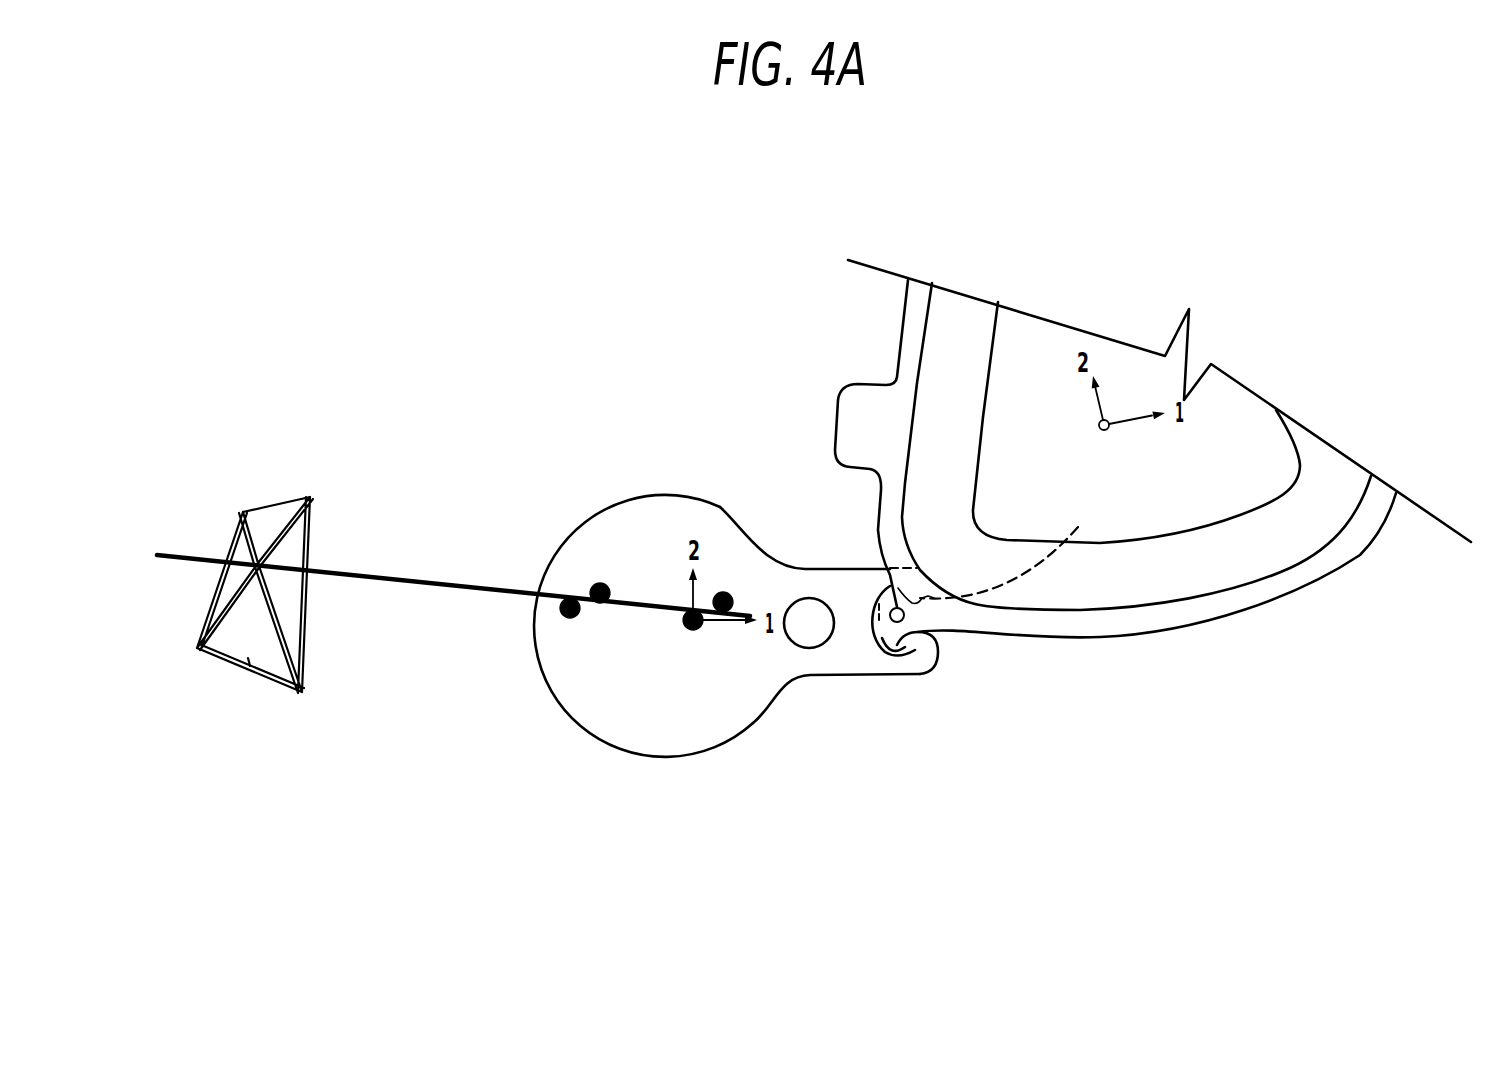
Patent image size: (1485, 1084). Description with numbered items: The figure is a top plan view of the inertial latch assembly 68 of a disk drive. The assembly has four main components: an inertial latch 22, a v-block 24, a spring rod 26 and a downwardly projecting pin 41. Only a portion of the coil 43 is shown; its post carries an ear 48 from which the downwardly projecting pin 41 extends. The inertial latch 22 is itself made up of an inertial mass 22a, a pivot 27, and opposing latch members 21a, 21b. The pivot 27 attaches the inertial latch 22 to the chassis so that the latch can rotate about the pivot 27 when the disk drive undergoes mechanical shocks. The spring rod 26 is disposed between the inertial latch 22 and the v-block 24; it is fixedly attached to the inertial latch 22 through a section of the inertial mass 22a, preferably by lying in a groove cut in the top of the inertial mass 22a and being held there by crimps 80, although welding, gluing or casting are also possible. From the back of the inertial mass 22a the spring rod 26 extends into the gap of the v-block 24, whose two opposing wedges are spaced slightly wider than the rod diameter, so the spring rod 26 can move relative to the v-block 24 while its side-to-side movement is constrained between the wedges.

The v-block 24 is at (289, 488).
The spring rod 26 is at (418, 575).
The inertial latch 22 is at (597, 503).
The inertial mass 22a is at (752, 723).
The crimps 80 is at (730, 593).
The pivot 27 is at (826, 652).
The downwardly projecting pin 41 is at (897, 607).
The ear 48 is at (899, 627).
The latch member 21a is at (1016, 549).
The latch member 21b is at (942, 655).
The coil 43 is at (1264, 608).
The inertial latch assembly 68 is at (590, 800).